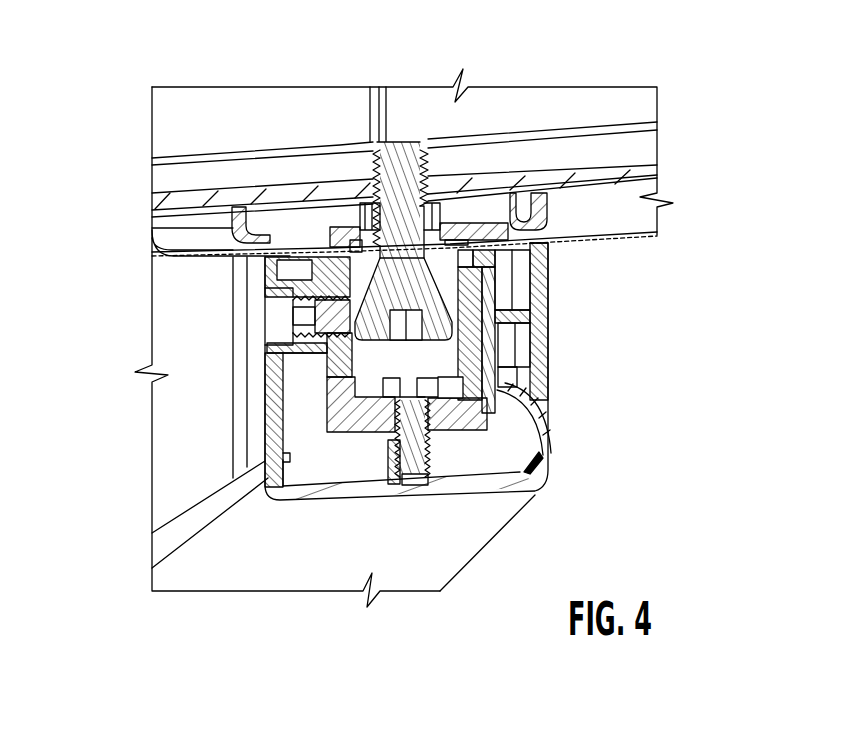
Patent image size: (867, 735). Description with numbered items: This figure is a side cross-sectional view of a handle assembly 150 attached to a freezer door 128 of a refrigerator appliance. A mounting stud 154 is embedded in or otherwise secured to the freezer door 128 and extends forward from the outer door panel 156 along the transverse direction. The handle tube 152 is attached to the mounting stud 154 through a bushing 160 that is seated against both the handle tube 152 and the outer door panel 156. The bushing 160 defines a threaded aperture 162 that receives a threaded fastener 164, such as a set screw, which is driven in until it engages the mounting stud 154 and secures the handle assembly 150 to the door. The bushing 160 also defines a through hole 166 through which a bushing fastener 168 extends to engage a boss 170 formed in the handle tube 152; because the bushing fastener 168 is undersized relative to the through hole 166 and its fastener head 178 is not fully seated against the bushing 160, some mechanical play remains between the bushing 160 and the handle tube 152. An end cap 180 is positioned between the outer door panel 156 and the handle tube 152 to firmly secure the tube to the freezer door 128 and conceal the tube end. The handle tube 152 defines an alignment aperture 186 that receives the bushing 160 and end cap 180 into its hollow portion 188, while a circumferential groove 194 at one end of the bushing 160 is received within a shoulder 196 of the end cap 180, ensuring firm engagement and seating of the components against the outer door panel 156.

The freezer door 128 is at (630, 150).
The handle assembly 150 is at (655, 443).
The handle tube 152 is at (512, 530).
The mounting stud 154 is at (390, 142).
The outer door panel 156 is at (638, 245).
The bushing 160 is at (472, 386).
The threaded aperture 162 is at (320, 346).
The threaded fastener 164 is at (293, 317).
The through hole 166 is at (387, 422).
The bushing fastener 168 is at (413, 452).
The boss 170 is at (432, 468).
The fastener head 178 is at (440, 372).
The end cap 180 is at (528, 300).
The alignment aperture 186 is at (300, 409).
The hollow portion 188 is at (522, 452).
The circumferential groove 194 is at (485, 262).
The shoulder 196 is at (328, 248).